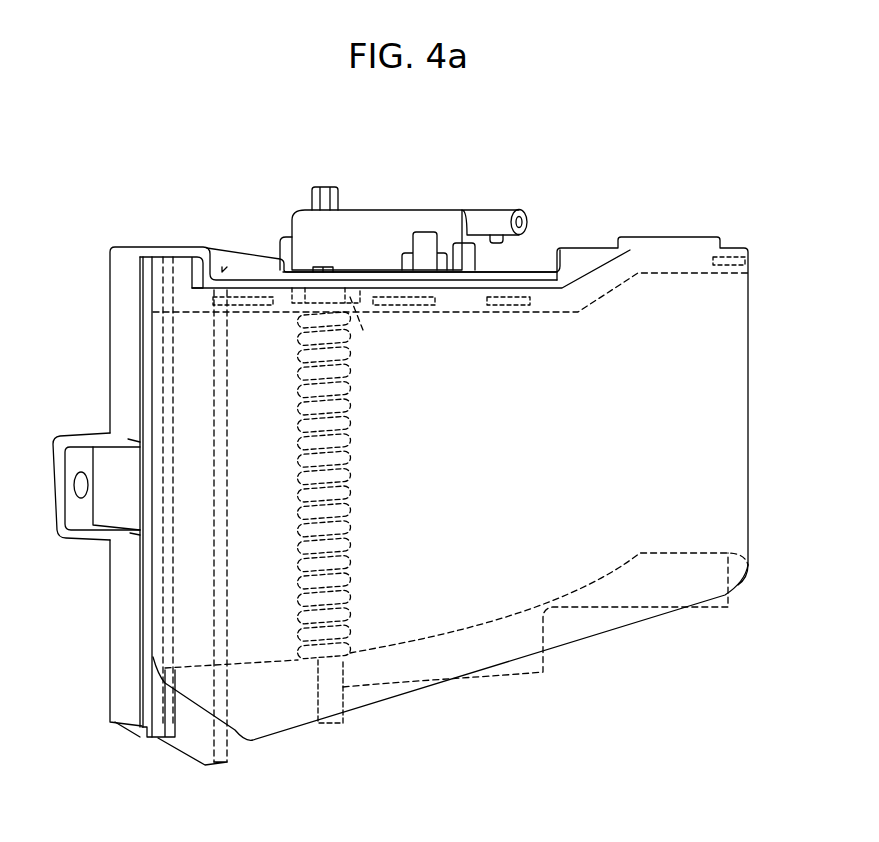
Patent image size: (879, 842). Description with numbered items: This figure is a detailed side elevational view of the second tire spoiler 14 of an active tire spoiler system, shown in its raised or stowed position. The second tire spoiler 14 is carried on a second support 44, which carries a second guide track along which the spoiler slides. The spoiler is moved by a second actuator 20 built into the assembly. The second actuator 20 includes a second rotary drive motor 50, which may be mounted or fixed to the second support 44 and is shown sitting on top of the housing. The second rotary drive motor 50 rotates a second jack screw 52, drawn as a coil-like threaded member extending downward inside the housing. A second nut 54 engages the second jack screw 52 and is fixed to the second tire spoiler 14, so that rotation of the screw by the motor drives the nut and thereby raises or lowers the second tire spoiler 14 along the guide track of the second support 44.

The second tire spoiler 14 is at (744, 460).
The second actuator 20 is at (563, 212).
The second support 44 is at (113, 257).
The second rotary drive motor 50 is at (385, 222).
The second jack screw 52 is at (342, 430).
The second nut 54 is at (352, 310).